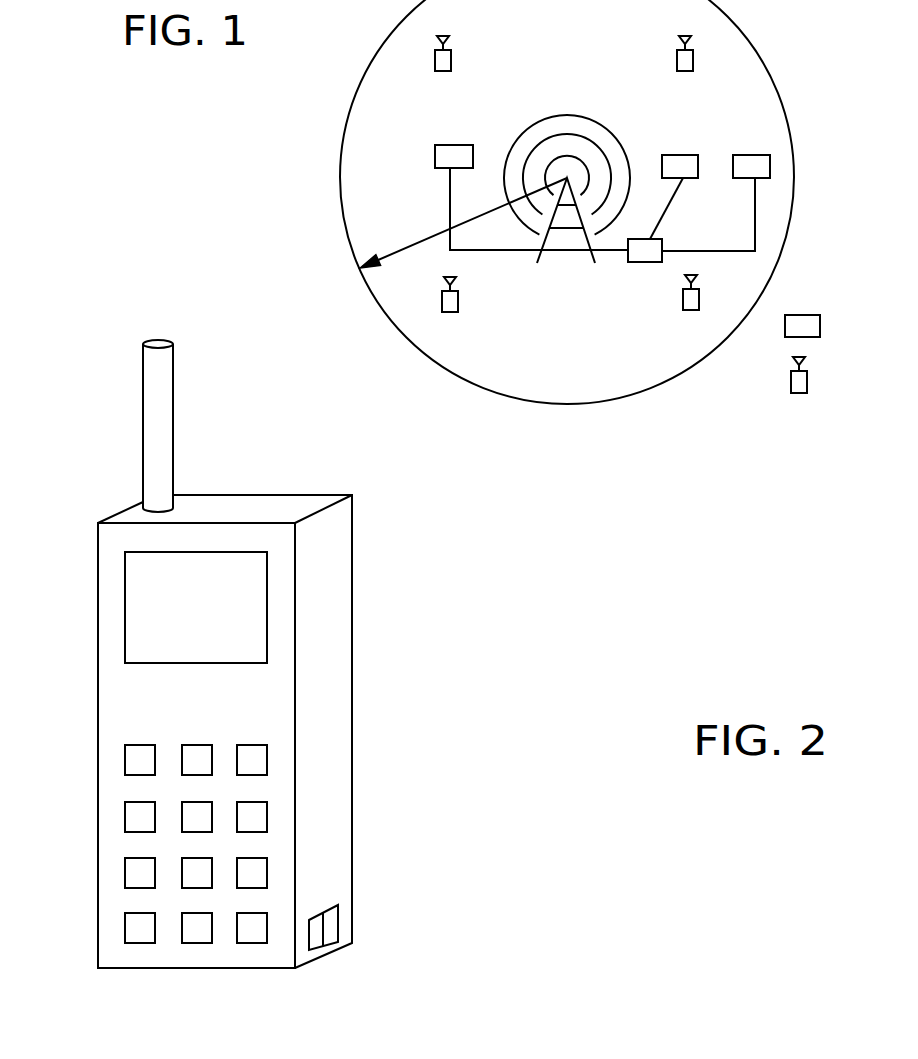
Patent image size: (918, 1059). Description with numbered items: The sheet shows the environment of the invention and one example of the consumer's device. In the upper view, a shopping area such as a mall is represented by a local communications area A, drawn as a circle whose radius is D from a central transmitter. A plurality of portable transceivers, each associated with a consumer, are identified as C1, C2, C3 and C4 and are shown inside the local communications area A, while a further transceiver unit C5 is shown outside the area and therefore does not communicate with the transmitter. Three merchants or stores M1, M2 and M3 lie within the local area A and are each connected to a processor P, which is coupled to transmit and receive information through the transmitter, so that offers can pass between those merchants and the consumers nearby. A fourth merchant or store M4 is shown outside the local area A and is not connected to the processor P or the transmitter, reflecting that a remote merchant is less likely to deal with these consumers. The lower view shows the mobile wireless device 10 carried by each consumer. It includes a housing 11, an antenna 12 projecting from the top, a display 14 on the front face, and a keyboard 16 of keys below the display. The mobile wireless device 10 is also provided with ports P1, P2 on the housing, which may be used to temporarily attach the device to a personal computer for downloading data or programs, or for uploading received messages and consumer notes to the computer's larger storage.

In FIG. 1, the local communications area A is at (380, 309).
In FIG. 1, the radius D is at (463, 223).
In FIG. 1, the merchant or store M1 is at (531, 197).
In FIG. 1, the merchant or store M2 is at (674, 197).
In FIG. 1, the merchant or store M3 is at (716, 203).
In FIG. 1, the merchant or store M4 is at (802, 326).
In FIG. 1, the processor P is at (645, 250).
In FIG. 1, the portable transceiver C1 is at (451, 71).
In FIG. 1, the portable transceiver C2 is at (693, 71).
In FIG. 1, the portable transceiver C3 is at (458, 312).
In FIG. 1, the portable transceiver C4 is at (683, 310).
In FIG. 1, the transceiver unit C5 is at (791, 393).
In FIG. 2, the mobile wireless device 10 is at (284, 681).
In FIG. 2, the housing 11 is at (327, 840).
In FIG. 2, the antenna 12 is at (160, 398).
In FIG. 2, the display 14 is at (238, 610).
In FIG. 2, the keyboard 16 is at (250, 762).
In FIG. 2, the port P1 is at (318, 932).
In FIG. 2, the port P2 is at (330, 922).